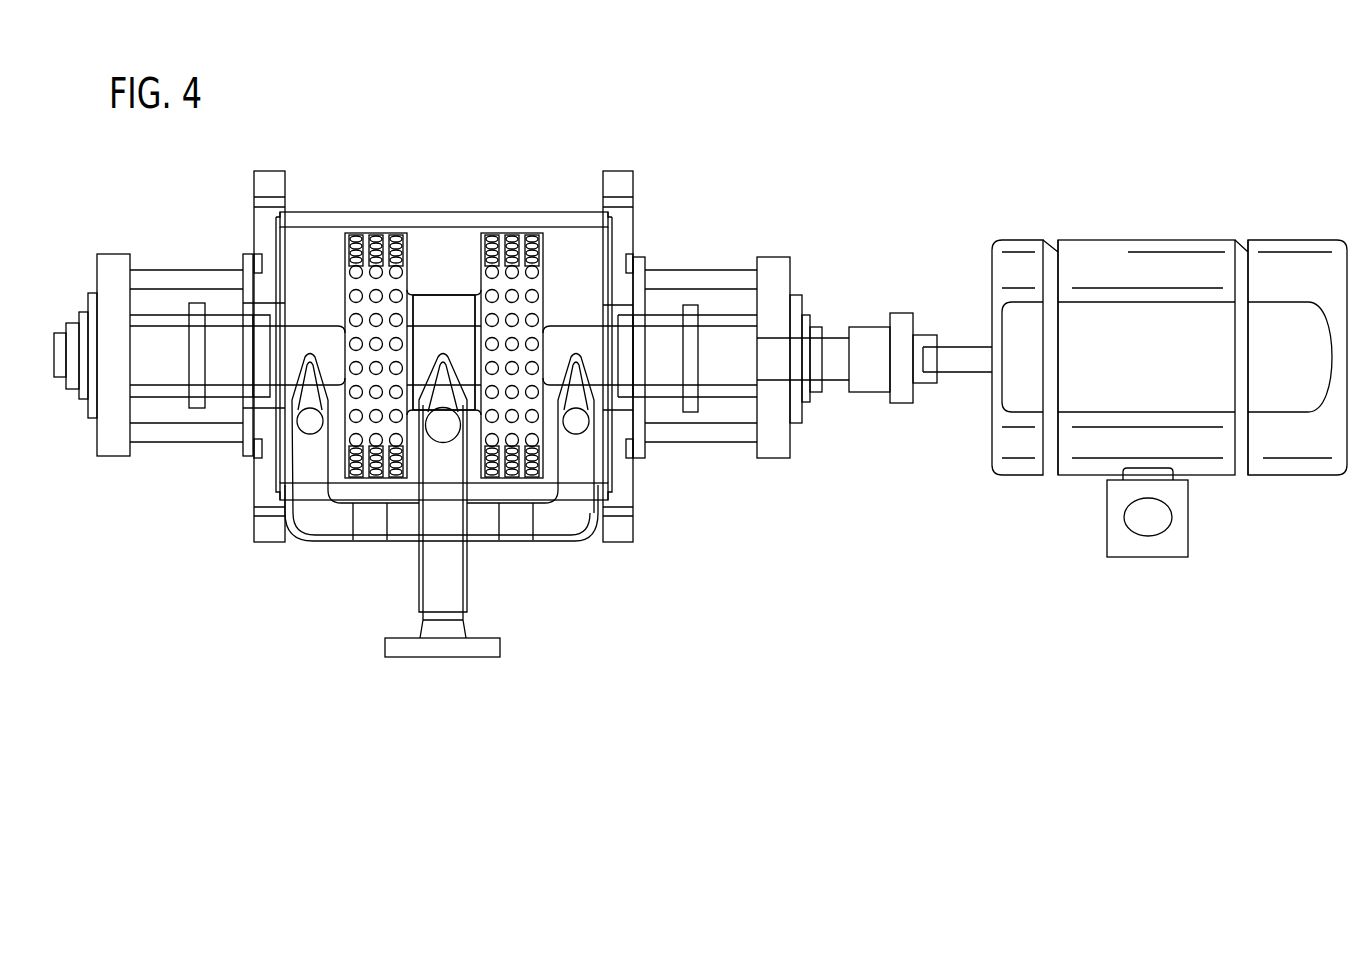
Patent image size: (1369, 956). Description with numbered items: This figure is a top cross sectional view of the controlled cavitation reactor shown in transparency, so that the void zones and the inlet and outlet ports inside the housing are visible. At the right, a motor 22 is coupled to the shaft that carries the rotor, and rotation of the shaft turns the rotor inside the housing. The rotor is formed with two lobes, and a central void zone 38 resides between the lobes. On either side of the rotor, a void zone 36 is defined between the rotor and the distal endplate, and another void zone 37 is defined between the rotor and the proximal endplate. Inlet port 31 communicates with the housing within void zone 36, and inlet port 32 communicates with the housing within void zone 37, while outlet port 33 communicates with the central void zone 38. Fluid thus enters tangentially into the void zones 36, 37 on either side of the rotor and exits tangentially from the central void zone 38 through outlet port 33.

The motor 22 is at (1157, 265).
The inlet port 31 is at (578, 422).
The inlet port 32 is at (310, 418).
The outlet port 33 is at (443, 430).
The void zone 36 is at (577, 258).
The void zone 37 is at (312, 258).
The central void zone 38 is at (443, 258).